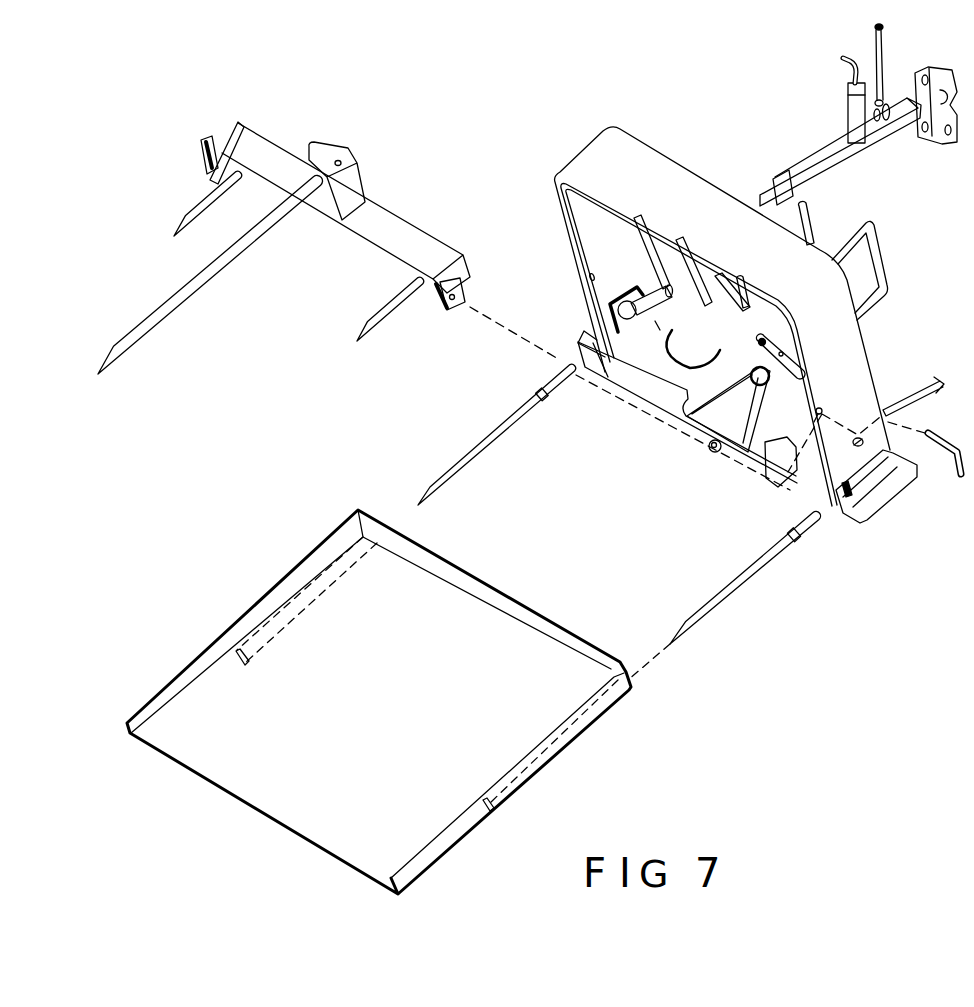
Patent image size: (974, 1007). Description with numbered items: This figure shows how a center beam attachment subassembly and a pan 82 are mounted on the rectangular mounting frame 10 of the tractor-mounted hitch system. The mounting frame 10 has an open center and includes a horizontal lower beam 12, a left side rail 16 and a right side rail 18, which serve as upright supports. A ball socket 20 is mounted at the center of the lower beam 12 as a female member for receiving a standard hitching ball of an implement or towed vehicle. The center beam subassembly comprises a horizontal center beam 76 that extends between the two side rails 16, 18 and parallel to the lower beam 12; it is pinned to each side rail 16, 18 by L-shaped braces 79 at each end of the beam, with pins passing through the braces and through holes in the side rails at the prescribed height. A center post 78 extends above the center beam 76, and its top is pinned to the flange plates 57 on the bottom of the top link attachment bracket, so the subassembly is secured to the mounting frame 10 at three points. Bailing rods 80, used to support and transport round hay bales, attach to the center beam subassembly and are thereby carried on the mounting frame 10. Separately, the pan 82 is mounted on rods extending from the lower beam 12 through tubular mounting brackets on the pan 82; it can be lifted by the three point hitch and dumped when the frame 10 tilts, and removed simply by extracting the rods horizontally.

The mounting frame 10 is at (807, 268).
The lower beam 12 is at (647, 353).
The left side rail 16 is at (598, 290).
The right side rail 18 is at (842, 367).
The ball socket 20 is at (715, 452).
The flange plates 57 is at (658, 277).
The center beam 76 is at (365, 250).
The center post 78 is at (353, 182).
The L-shaped braces 79 is at (208, 143).
The bailing rods 80 is at (200, 285).
The pan 82 is at (240, 697).